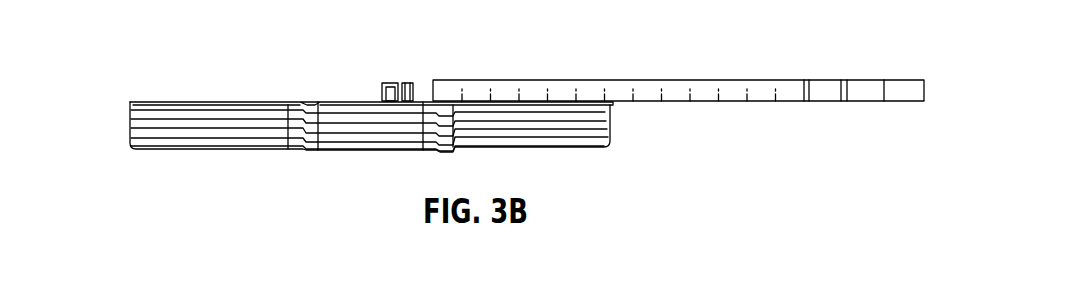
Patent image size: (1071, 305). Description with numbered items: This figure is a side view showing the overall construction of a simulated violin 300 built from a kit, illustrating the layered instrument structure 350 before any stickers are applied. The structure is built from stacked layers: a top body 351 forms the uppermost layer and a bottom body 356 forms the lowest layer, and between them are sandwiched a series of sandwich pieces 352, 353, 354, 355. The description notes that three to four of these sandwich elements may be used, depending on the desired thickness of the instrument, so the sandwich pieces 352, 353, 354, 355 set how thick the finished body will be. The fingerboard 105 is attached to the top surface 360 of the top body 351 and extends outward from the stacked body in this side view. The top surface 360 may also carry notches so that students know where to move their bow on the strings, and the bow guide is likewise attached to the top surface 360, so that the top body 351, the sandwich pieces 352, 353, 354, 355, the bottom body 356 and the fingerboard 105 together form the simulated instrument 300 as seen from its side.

The device assembly 300 is at (406, 69).
The fingerboard 105 is at (743, 80).
The layered stack 350 is at (241, 79).
The top body 351 is at (130, 104).
The sandwich piece 352 is at (130, 112).
The sandwich piece 353 is at (131, 121).
The sandwich piece 354 is at (131, 131).
The sandwich piece 355 is at (131, 141).
The bottom body 356 is at (159, 152).
The top surface 360 is at (330, 101).